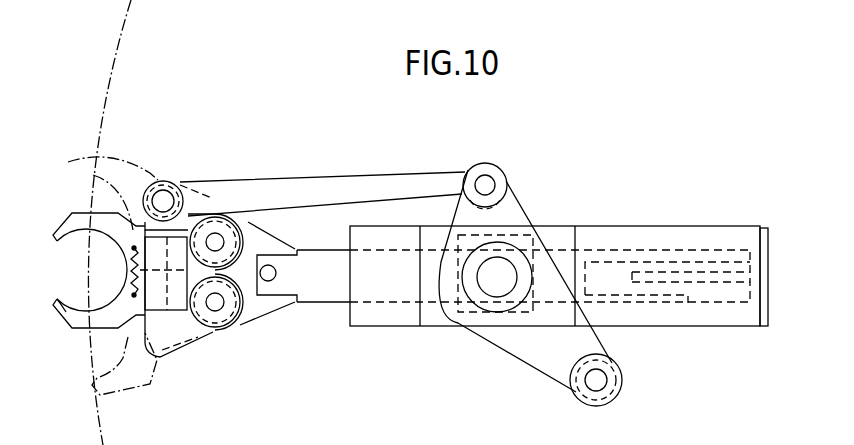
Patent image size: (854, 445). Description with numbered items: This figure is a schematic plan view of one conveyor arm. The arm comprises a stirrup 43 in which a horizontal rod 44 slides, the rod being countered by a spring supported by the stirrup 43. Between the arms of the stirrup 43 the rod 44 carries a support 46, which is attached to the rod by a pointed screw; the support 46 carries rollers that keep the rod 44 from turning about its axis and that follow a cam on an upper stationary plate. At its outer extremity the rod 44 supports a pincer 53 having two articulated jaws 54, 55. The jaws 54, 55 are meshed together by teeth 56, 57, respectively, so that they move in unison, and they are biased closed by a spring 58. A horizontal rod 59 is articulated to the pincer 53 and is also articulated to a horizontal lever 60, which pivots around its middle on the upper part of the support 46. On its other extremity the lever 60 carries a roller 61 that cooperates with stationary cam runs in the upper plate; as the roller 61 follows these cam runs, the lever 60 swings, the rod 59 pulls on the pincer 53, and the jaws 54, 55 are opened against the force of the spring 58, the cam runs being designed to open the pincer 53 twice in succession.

The stirrup 43 is at (388, 313).
The horizontal rod 44 is at (327, 283).
The support 46 is at (492, 283).
The pincer 53 is at (98, 345).
The jaw 54 is at (69, 224).
The jaw 55 is at (66, 326).
The teeth 56 is at (246, 232).
The teeth 57 is at (255, 317).
The spring 58 is at (131, 262).
The horizontal rod 59 is at (338, 192).
The horizontal lever 60 is at (531, 339).
The roller 61 is at (607, 358).